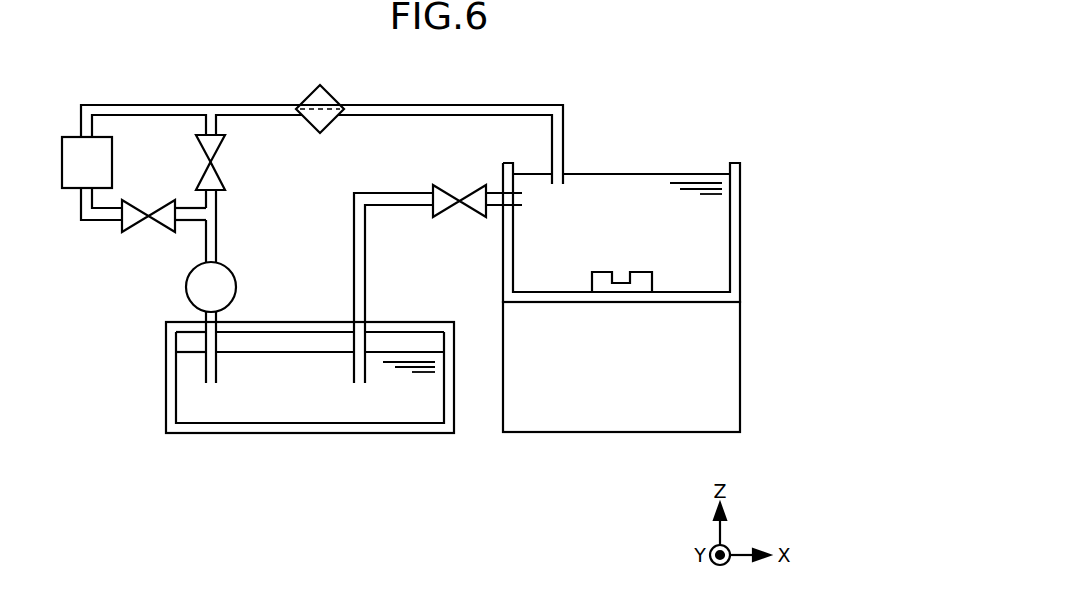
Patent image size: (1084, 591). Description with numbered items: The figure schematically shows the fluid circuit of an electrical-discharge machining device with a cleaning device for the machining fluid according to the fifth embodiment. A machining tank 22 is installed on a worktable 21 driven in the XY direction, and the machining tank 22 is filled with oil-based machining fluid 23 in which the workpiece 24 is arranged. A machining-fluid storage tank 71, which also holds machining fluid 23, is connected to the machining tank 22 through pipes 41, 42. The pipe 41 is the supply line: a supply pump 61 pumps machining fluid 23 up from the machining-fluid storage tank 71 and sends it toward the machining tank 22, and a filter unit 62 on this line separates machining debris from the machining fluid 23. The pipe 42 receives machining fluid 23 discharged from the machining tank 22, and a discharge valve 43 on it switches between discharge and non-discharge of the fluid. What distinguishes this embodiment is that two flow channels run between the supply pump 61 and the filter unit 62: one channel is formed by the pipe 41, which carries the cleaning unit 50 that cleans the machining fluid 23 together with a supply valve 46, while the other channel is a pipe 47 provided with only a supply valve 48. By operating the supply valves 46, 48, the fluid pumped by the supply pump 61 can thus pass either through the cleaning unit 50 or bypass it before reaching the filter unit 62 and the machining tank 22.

The worktable 21 is at (590, 432).
The machining tank 22 is at (742, 272).
The machining fluid 23 is at (187, 375).
The workpiece 24 is at (654, 281).
The pipe 41 is at (142, 105).
The pipe 42 is at (390, 193).
The discharge valve 43 is at (450, 187).
The supply valve 46 is at (146, 222).
The pipe 47 is at (218, 197).
The supply valve 48 is at (222, 172).
The cleaning unit 50 is at (112, 160).
The supply pump 61 is at (186, 287).
The filter unit 62 is at (306, 98).
The machining-fluid storage tank 71 is at (166, 403).